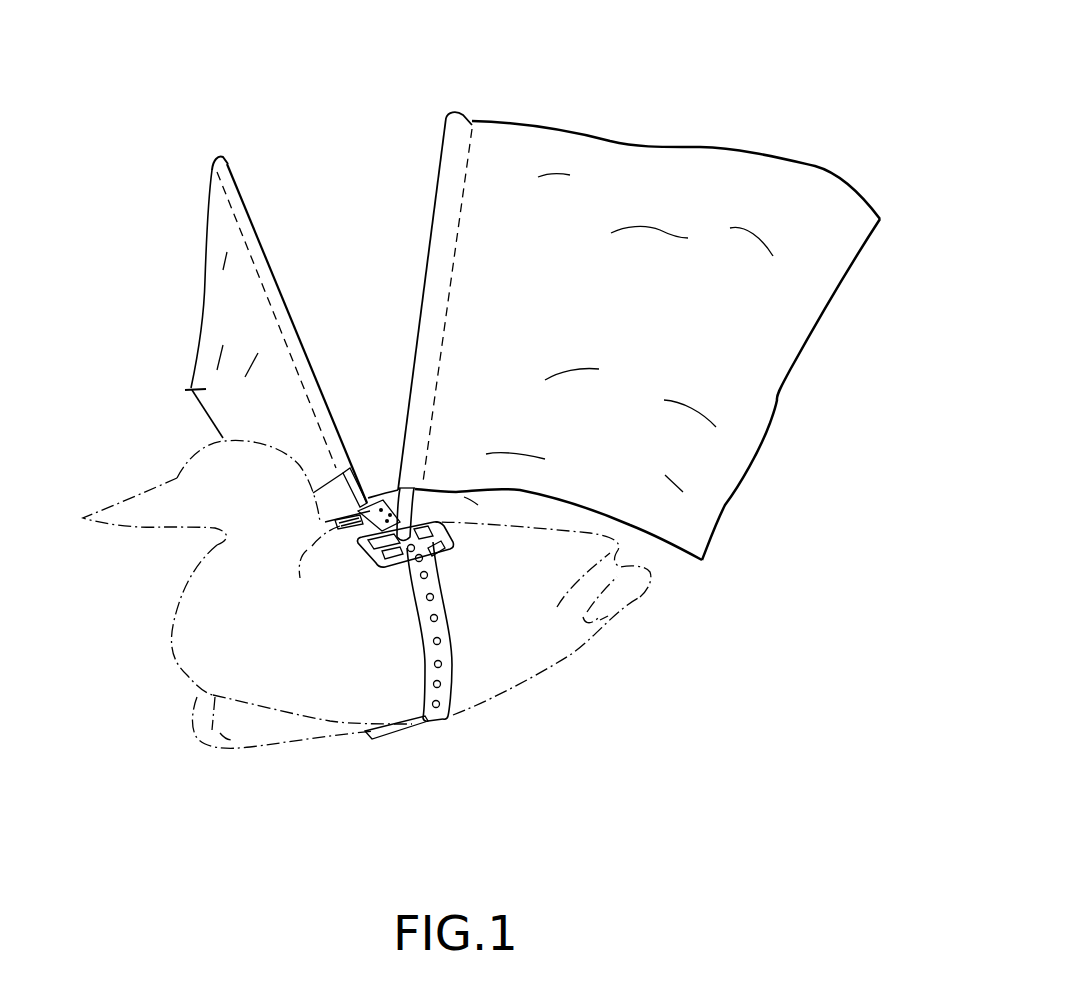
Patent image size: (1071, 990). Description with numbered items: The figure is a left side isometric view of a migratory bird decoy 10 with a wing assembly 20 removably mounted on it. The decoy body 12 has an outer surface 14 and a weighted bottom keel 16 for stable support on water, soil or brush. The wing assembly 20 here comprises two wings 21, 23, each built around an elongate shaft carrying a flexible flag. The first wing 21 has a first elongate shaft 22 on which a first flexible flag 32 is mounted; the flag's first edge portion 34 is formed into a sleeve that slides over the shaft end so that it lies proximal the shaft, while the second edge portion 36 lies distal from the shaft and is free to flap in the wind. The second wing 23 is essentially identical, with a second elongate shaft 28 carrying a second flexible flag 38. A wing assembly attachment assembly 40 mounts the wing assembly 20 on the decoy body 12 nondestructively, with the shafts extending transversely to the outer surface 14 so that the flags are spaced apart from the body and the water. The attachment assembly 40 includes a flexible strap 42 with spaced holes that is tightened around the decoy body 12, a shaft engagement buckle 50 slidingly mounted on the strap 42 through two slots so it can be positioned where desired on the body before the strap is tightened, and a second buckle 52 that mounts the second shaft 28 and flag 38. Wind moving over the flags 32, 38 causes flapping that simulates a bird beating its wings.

The migratory bird decoy 10 is at (140, 605).
The decoy body 12 is at (482, 676).
The outer surface 14 is at (283, 659).
The weighted bottom keel 16 is at (265, 733).
The wing assembly 20 is at (724, 95).
The first wing 21 is at (294, 285).
The first elongate shaft 22 is at (354, 494).
The second wing 23 is at (428, 192).
The second elongate shaft 28 is at (468, 500).
The first flexible flag 32 is at (270, 404).
The first edge portion 34 is at (243, 196).
The second edge portion 36 is at (205, 390).
The second flexible flag 38 is at (690, 334).
The wing assembly attachment assembly 40 is at (376, 588).
The flexible strap 42 is at (420, 630).
The shaft engagement buckle 50 is at (333, 523).
The second buckle 52 is at (447, 585).